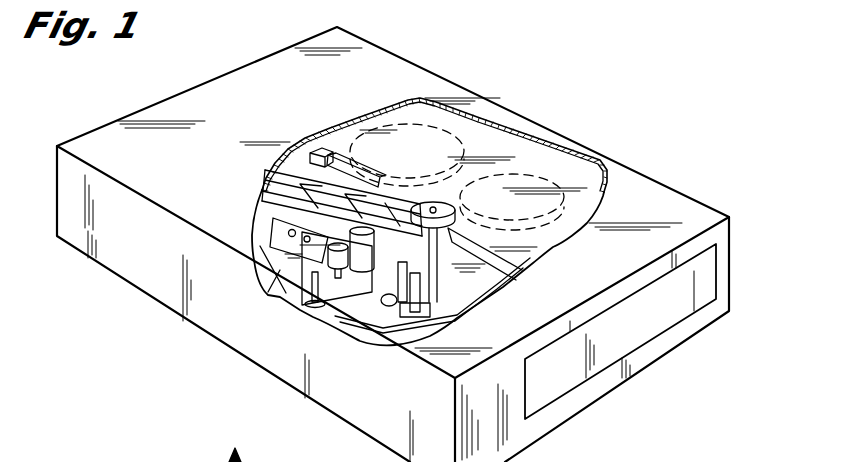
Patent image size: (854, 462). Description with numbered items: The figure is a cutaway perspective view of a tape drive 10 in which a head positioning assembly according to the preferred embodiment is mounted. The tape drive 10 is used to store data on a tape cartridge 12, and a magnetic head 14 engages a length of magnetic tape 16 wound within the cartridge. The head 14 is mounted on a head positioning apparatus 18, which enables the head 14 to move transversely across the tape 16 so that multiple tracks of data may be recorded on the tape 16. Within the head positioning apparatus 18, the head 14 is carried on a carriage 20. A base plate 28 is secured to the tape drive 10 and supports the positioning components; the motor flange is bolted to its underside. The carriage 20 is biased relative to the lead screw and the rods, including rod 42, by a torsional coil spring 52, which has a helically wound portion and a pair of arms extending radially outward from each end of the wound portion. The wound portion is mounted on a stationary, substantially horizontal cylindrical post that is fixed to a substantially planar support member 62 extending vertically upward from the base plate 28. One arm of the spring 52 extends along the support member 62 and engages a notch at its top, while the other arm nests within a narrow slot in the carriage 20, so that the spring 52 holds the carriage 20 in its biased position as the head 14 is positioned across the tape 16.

The tape drive 10 is at (478, 62).
The tape cartridge 12 is at (512, 163).
The magnetic head 14 is at (382, 163).
The magnetic tape 16 is at (340, 160).
The head positioning apparatus 18 is at (264, 214).
The carriage 20 is at (336, 300).
The base plate 28 is at (483, 287).
The rod 42 is at (285, 297).
The torsional coil spring 52 is at (382, 298).
The support member 62 is at (413, 310).